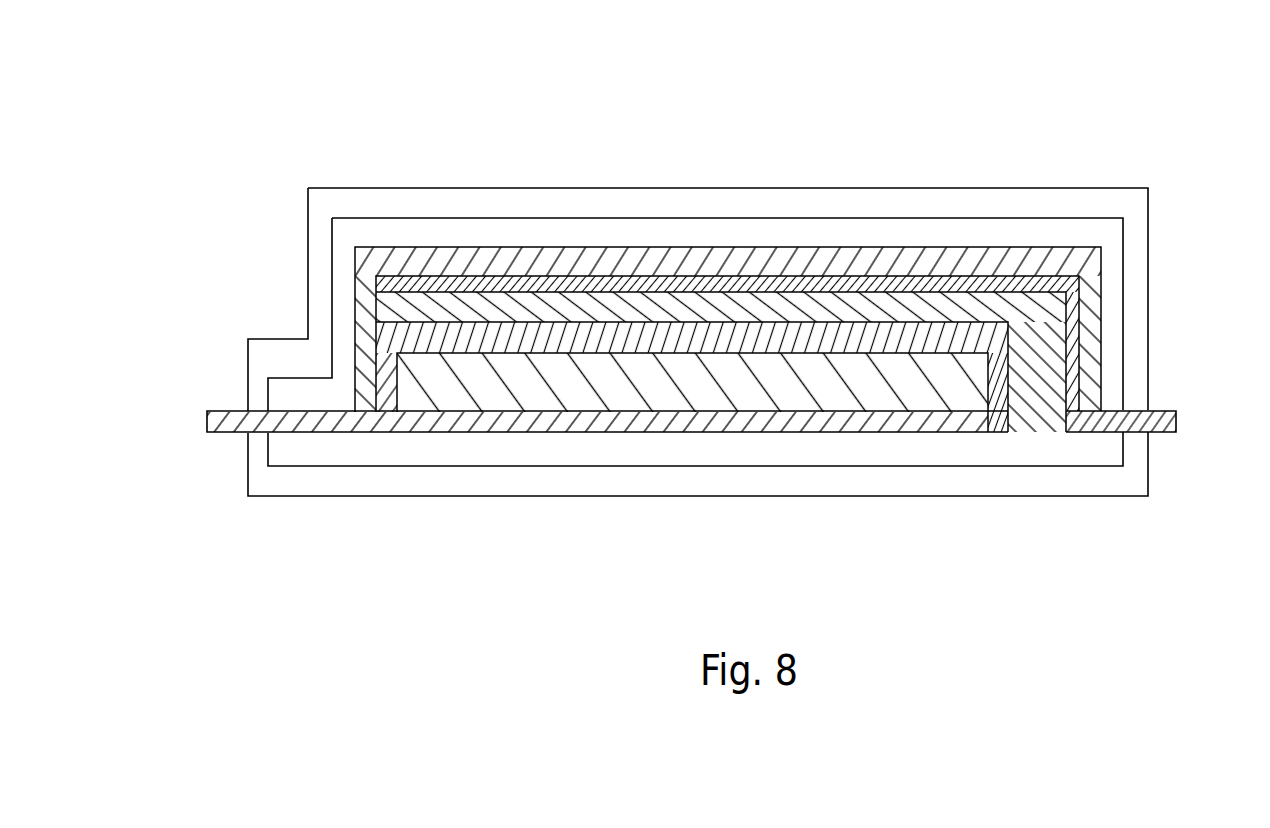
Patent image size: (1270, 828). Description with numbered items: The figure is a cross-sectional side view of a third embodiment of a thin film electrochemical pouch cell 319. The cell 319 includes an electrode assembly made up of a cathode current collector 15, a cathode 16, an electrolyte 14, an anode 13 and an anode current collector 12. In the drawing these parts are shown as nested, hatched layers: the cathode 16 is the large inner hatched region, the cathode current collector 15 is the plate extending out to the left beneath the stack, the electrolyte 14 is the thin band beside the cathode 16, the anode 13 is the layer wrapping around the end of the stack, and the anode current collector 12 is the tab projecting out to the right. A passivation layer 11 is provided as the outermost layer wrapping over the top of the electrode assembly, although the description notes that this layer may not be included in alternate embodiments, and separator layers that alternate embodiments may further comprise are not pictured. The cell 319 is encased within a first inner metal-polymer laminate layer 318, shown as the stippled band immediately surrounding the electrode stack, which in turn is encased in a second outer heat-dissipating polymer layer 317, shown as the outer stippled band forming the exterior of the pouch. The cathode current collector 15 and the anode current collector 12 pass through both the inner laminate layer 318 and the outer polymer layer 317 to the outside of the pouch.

The thin film electrochemical pouch cell 319 is at (270, 138).
The passivation layer 11 is at (493, 255).
The anode current collector 12 is at (1170, 416).
The anode 13 is at (1047, 405).
The electrolyte 14 is at (1000, 422).
The cathode current collector 15 is at (225, 420).
The cathode 16 is at (761, 402).
The second outer heat-dissipating polymer layer 317 is at (426, 482).
The first inner metal-polymer laminate layer 318 is at (338, 450).